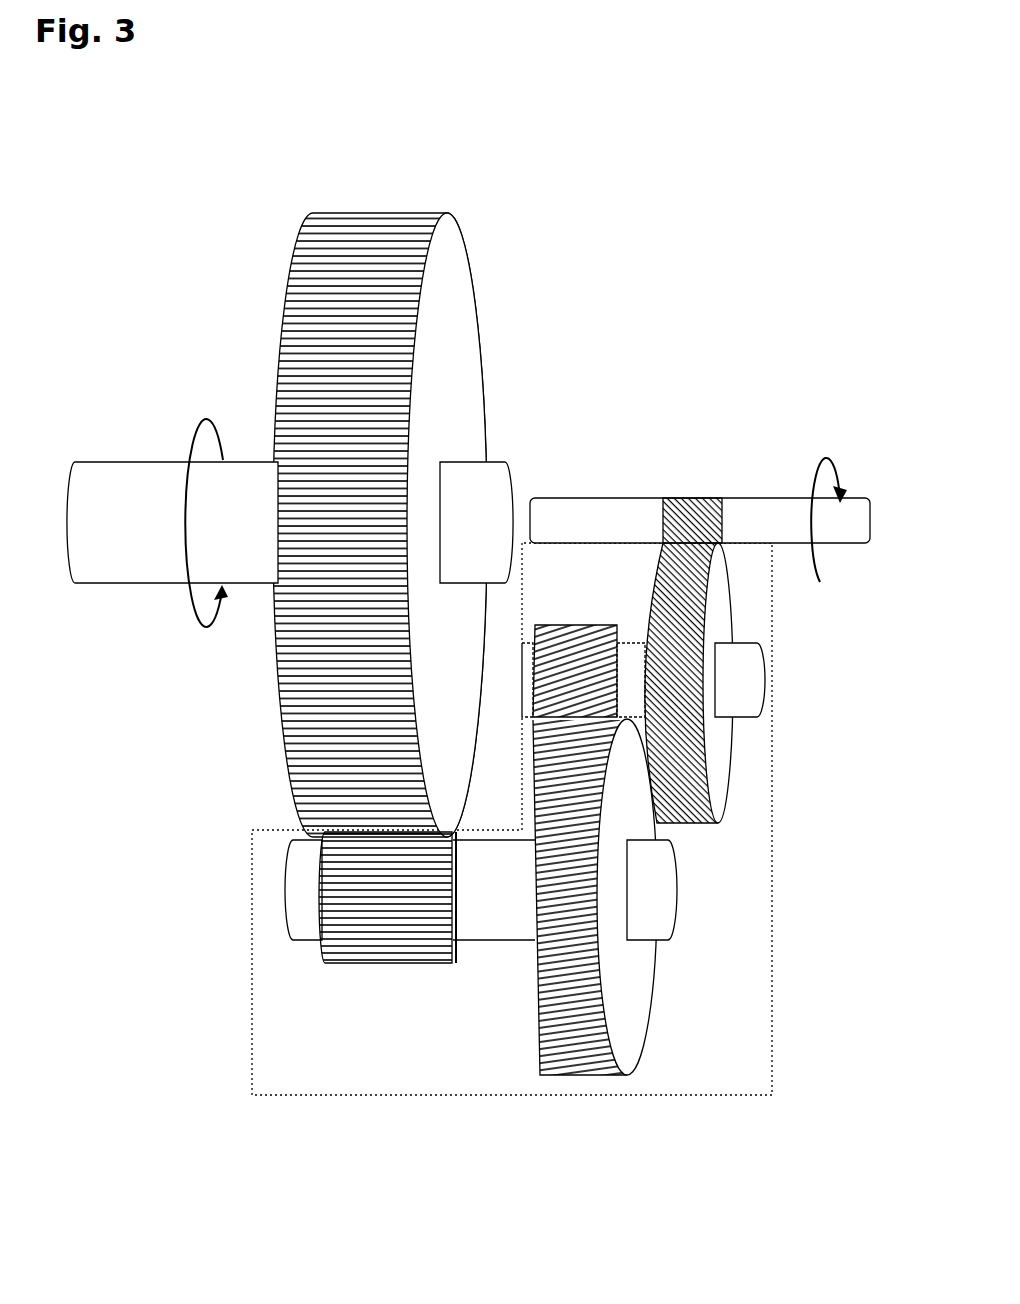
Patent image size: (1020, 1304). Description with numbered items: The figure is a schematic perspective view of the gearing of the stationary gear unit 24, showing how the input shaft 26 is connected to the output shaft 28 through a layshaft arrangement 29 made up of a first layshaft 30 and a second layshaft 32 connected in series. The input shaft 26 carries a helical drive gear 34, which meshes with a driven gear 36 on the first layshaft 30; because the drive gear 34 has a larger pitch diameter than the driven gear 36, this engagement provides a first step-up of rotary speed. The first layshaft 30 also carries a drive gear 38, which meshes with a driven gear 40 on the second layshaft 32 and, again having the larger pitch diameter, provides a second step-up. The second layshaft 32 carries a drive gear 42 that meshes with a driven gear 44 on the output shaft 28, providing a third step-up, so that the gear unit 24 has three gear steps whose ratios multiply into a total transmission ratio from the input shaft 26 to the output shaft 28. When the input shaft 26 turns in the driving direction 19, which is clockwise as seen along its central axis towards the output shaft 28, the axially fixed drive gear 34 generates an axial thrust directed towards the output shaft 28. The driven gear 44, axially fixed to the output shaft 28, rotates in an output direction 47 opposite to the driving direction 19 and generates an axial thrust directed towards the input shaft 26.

The gear unit 24 is at (470, 550).
The input shaft 26 is at (290, 482).
The driving direction 19 is at (182, 544).
The drive gear 34 is at (409, 523).
The output shaft 28 is at (700, 483).
The driven gear 44 is at (692, 483).
The output direction 47 is at (827, 481).
The driven gear 40 is at (575, 638).
The second layshaft 32 is at (683, 680).
The drive gear 42 is at (737, 699).
The first layshaft 30 is at (345, 890).
The driven gear 36 is at (387, 953).
The drive gear 38 is at (595, 942).
The layshaft arrangement 29 is at (512, 878).